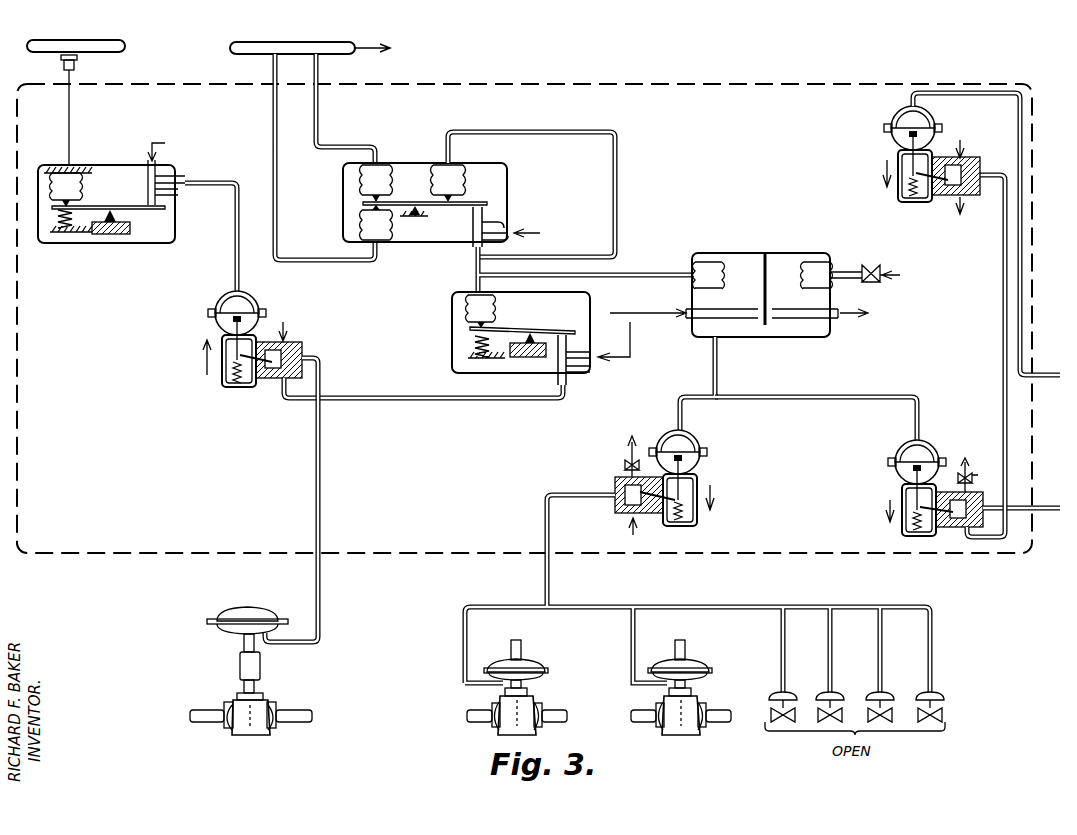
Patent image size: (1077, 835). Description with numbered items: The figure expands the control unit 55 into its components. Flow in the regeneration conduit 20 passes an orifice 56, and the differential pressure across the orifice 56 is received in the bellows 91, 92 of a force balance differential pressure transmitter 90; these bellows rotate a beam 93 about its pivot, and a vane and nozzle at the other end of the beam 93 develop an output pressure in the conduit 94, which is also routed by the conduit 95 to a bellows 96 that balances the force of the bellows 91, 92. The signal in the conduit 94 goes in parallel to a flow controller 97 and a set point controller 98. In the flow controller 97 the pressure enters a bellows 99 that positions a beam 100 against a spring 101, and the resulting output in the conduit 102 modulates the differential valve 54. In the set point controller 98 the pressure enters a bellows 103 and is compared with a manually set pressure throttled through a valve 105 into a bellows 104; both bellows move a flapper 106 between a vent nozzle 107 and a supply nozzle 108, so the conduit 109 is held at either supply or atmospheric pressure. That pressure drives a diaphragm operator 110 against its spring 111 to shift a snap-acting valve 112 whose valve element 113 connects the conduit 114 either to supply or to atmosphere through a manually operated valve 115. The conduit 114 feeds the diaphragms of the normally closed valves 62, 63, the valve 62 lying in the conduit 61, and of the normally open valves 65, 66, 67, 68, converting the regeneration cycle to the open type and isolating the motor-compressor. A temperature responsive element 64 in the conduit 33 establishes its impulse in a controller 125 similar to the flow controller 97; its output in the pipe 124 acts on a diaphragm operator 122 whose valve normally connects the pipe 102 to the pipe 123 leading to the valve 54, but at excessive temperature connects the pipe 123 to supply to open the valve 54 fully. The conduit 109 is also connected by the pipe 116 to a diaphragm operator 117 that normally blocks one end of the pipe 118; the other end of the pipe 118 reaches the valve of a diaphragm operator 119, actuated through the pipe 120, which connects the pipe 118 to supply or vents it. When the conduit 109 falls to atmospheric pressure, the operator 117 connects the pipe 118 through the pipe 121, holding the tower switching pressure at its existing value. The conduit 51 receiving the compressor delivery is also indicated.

The conduit 33 is at (84, 40).
The temperature responsive element 64 is at (76, 65).
The orifice 56 is at (246, 42).
The conduit 20 is at (315, 42).
The control unit 55 is at (714, 84).
The controller 125 is at (145, 243).
The pipe 124 is at (232, 250).
The diaphragm operator 122 is at (214, 307).
The conduit 102 is at (348, 398).
The pipe 123 is at (320, 500).
The force balance fluid pressure transmitter 90 is at (451, 203).
The bellows 91 is at (370, 163).
The bellows 92 is at (380, 238).
The beam 93 is at (483, 205).
The conduit 94 is at (475, 277).
The conduit 95 is at (615, 170).
The bellows 96 is at (448, 163).
The flow controller 97 is at (537, 330).
The bellows 99 is at (468, 305).
The beam 100 is at (486, 327).
The spring 101 is at (470, 350).
The set point controller 98 is at (783, 286).
The bellows 103 is at (712, 270).
The bellows 104 is at (805, 265).
The valve 105 is at (884, 245).
The flapper 106 is at (768, 290).
The vent nozzle 107 is at (808, 322).
The supply nozzle 108 is at (703, 322).
The conduit 109 is at (718, 385).
The diaphragm operator 110 is at (659, 486).
The spring 111 is at (697, 520).
The valve 112 is at (615, 481).
The valve element 113 is at (625, 508).
The conduit 114 is at (550, 595).
The manually operated valve 115 is at (622, 466).
The pipe 116 is at (870, 397).
The diaphragm operator 117 is at (895, 470).
The pipe 118 is at (1003, 355).
The diaphragm operator 119 is at (891, 140).
The pipe 120 is at (1050, 374).
The pipe 121 is at (1066, 490).
The differential valve 54 is at (237, 607).
The conduit 51 is at (280, 702).
The valve 63 is at (528, 692).
The conduit 61 is at (707, 705).
The two-position valve 62 is at (692, 690).
The valve 65 is at (772, 712).
The valve 66 is at (820, 712).
The valve 67 is at (870, 712).
The valve 68 is at (920, 712).